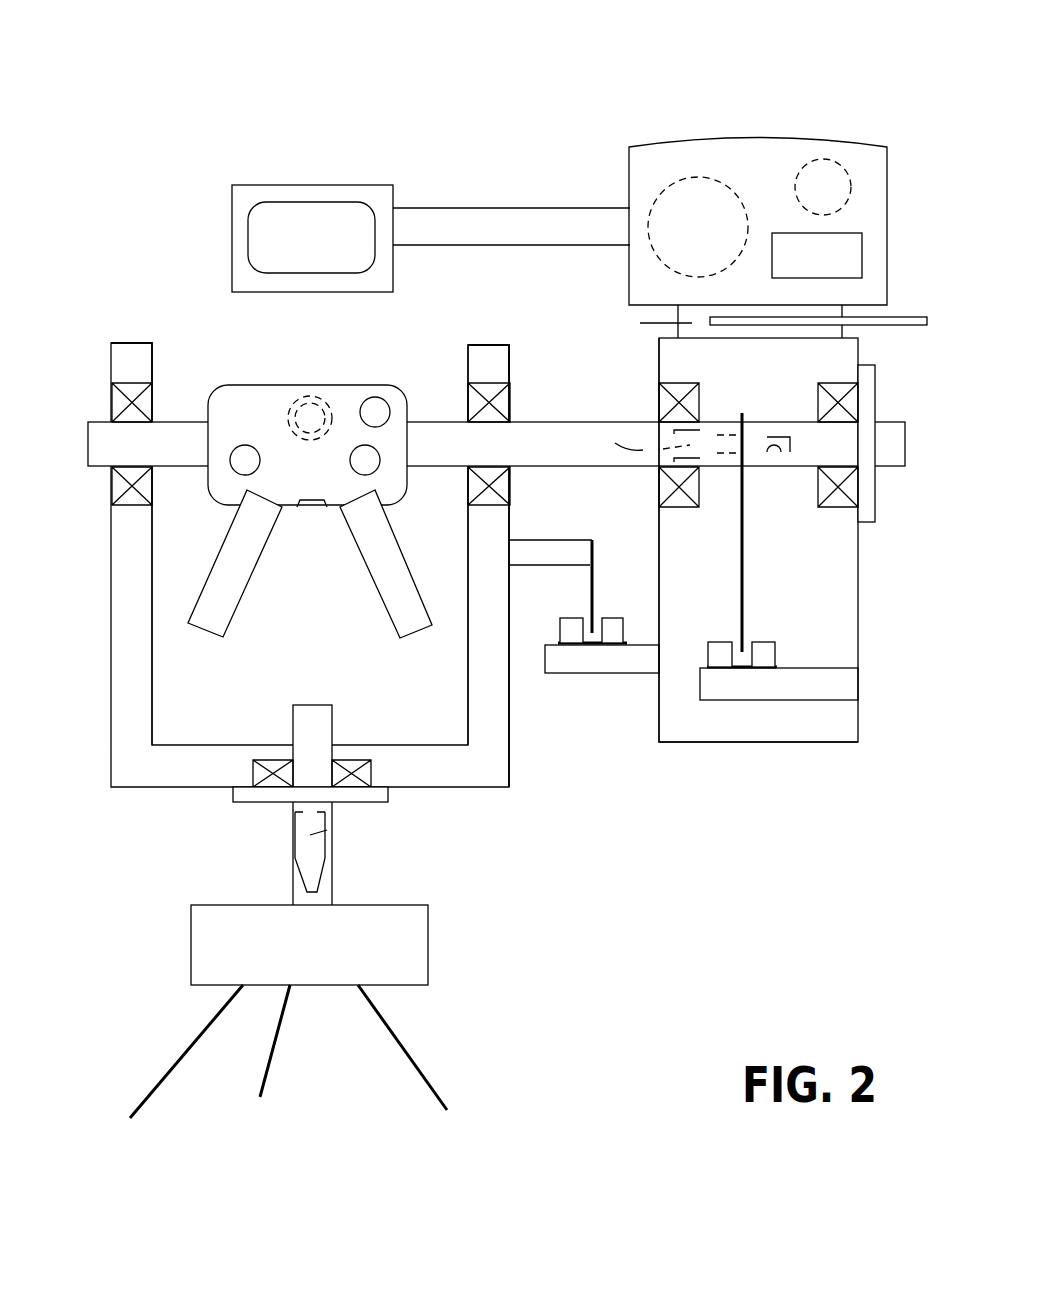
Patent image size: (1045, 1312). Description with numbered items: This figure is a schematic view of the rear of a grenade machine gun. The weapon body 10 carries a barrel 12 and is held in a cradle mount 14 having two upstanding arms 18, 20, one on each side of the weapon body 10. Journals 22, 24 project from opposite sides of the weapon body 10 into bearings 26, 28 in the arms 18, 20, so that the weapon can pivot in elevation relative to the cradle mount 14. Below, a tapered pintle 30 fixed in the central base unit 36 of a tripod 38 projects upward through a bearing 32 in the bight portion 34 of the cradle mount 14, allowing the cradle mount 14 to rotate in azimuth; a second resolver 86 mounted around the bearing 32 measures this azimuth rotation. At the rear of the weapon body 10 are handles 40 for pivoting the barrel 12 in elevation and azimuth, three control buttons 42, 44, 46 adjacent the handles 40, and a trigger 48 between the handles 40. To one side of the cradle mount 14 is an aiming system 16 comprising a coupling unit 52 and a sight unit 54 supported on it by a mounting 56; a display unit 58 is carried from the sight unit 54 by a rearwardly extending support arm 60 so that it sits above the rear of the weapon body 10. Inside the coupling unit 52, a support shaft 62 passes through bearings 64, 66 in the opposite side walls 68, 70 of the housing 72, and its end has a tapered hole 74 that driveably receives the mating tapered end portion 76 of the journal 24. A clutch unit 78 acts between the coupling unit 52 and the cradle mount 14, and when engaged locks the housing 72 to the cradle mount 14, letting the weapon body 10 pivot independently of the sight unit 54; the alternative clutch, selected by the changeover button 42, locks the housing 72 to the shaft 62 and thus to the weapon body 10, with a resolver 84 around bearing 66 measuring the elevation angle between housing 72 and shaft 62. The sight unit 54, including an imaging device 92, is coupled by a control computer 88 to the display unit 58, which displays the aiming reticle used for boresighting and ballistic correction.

The weapon body 10 is at (222, 397).
The barrel 12 is at (315, 390).
The cradle mount 14 is at (173, 767).
The aiming system 16 is at (660, 760).
The upstanding arm 18 is at (127, 668).
The upstanding arm 20 is at (482, 663).
The journal 22 is at (172, 440).
The journal 24 is at (428, 440).
The bearing 26 is at (122, 398).
The bearing 28 is at (498, 402).
The tapered pintle 30 is at (347, 830).
The bearing 32 is at (350, 758).
The bight portion 34 is at (428, 767).
The central base unit 36 is at (428, 937).
The tripod 38 is at (400, 1037).
The handles 40 is at (408, 605).
The control button 42 is at (243, 462).
The control button 44 is at (372, 462).
The control button 46 is at (378, 407).
The trigger 48 is at (318, 507).
The coupling unit 52 is at (817, 763).
The sight unit 54 is at (780, 112).
The mounting 56 is at (640, 323).
The display unit 58 is at (288, 183).
The support arm 60 is at (513, 223).
The support shaft 62 is at (805, 438).
The bearing 64 is at (668, 403).
The bearing 66 is at (840, 395).
The side wall 68 is at (667, 710).
The side wall 70 is at (850, 638).
The housing 72 is at (773, 743).
The tapered hole 74 is at (787, 453).
The tapered end portion 76 is at (600, 433).
The clutch unit 78 is at (590, 683).
The resolver 84 is at (867, 510).
The second resolver 86 is at (273, 803).
The control computer 88 is at (787, 233).
The imaging device 92 is at (847, 170).